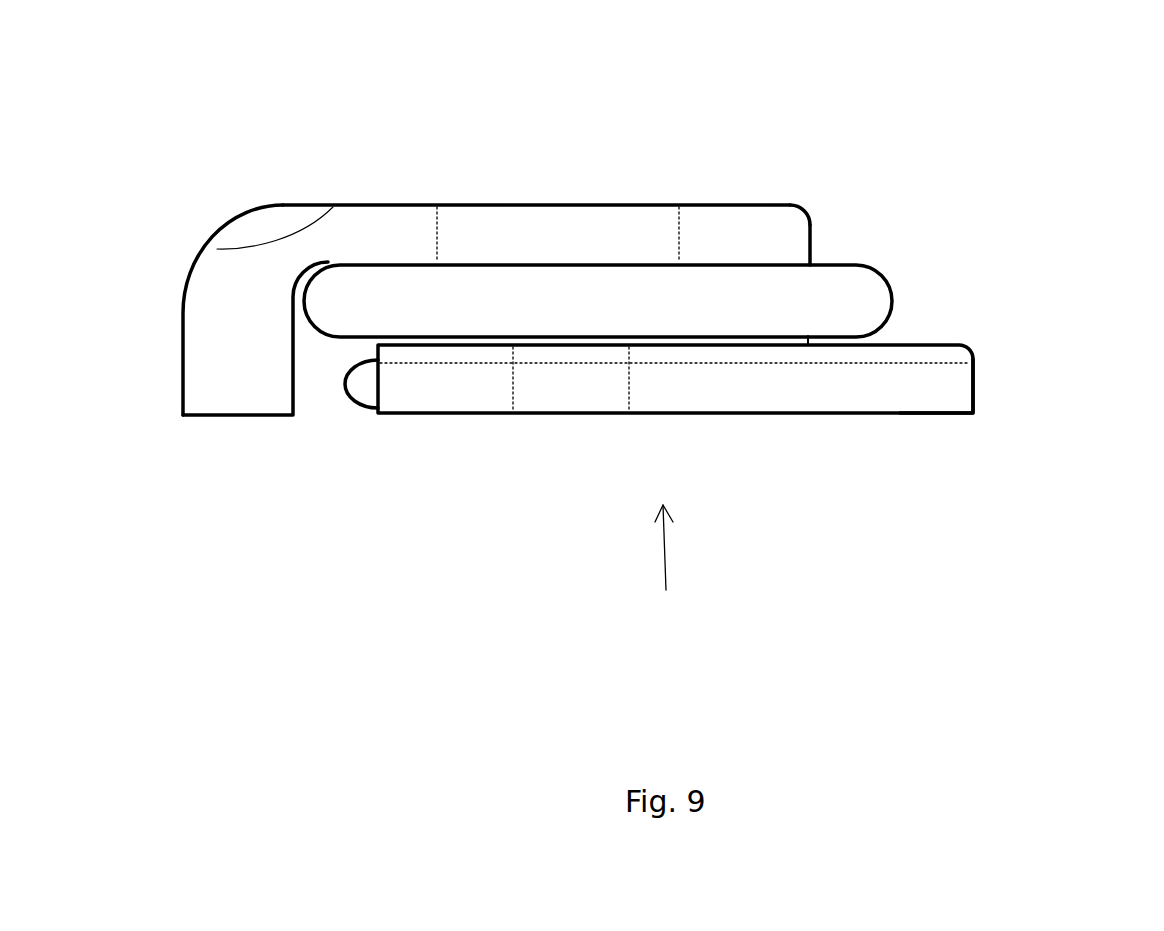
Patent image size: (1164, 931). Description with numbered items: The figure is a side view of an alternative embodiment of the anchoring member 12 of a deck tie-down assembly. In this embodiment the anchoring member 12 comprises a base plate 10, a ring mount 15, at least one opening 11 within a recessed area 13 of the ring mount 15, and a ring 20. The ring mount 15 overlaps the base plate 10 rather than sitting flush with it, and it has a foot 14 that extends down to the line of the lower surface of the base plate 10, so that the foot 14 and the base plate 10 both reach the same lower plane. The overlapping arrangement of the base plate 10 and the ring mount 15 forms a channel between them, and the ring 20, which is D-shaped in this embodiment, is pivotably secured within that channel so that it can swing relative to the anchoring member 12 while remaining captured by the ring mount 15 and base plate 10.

The base plate 10 is at (975, 413).
The opening 11 is at (569, 382).
The anchoring member 12 is at (668, 586).
The recessed area 13 is at (540, 238).
The foot 14 is at (232, 417).
The ring mount 15 is at (798, 208).
The ring 20 is at (890, 272).